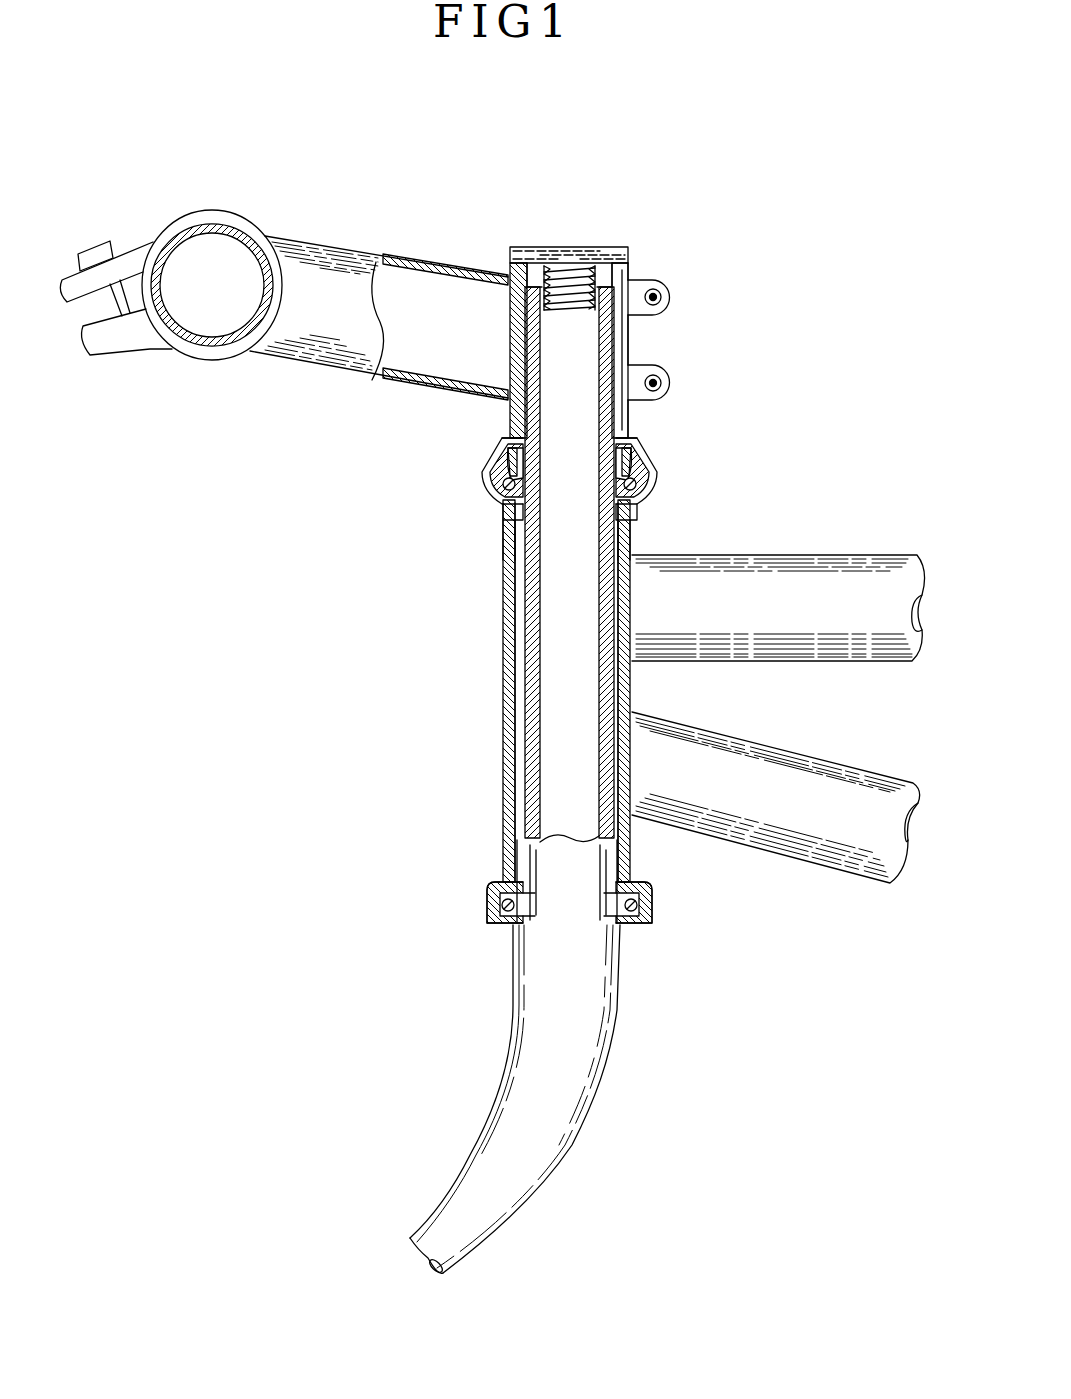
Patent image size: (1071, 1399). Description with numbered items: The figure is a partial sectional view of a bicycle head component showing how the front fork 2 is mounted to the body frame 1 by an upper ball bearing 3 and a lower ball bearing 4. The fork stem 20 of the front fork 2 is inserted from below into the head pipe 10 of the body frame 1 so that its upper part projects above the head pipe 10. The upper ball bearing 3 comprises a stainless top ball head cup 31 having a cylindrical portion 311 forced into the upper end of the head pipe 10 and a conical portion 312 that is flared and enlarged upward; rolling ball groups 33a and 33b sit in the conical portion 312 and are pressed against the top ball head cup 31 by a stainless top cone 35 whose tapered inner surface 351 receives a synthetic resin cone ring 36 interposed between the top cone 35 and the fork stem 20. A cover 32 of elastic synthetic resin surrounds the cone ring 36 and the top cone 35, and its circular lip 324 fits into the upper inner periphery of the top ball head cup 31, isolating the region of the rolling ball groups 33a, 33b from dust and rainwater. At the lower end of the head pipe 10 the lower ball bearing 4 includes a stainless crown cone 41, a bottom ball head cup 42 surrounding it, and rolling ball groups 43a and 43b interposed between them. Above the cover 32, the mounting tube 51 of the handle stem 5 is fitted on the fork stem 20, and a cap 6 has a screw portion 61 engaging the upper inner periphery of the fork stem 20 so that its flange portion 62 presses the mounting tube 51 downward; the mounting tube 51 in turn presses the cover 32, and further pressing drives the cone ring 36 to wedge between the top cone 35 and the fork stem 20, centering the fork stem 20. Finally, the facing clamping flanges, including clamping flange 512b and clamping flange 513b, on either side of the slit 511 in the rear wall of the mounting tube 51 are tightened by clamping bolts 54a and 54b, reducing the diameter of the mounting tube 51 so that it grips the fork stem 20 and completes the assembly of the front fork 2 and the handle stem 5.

The body frame 1 is at (871, 545).
The front fork 2 is at (580, 1045).
The upper ball bearing 3 is at (493, 432).
The lower ball bearing 4 is at (730, 895).
The handle stem 5 is at (334, 262).
The cap 6 is at (530, 250).
The head pipe 10 is at (510, 608).
The fork stem 20 is at (565, 716).
The top ball head cup 31 is at (500, 522).
The cover 32 is at (641, 438).
The rolling ball group 33a is at (651, 458).
The rolling ball group 33b is at (485, 503).
The top cone 35 is at (652, 450).
The cone ring 36 is at (495, 440).
The crown cone 41 is at (625, 950).
The bottom ball head cup 42 is at (650, 910).
The rolling ball group 43a is at (640, 884).
The rolling ball group 43b is at (488, 908).
The mounting tube 51 is at (505, 278).
The clamping bolt 54a is at (652, 288).
The clamping bolt 54b is at (652, 375).
The screw portion 61 is at (576, 262).
The flange portion 62 is at (613, 250).
The cylindrical portion 311 is at (620, 522).
The conical portion 312 is at (643, 490).
The circular lip 324 is at (650, 470).
The inner surface 351 is at (500, 482).
The slit 511 is at (628, 327).
The clamping flange 512b is at (668, 290).
The clamping flange 513b is at (666, 388).